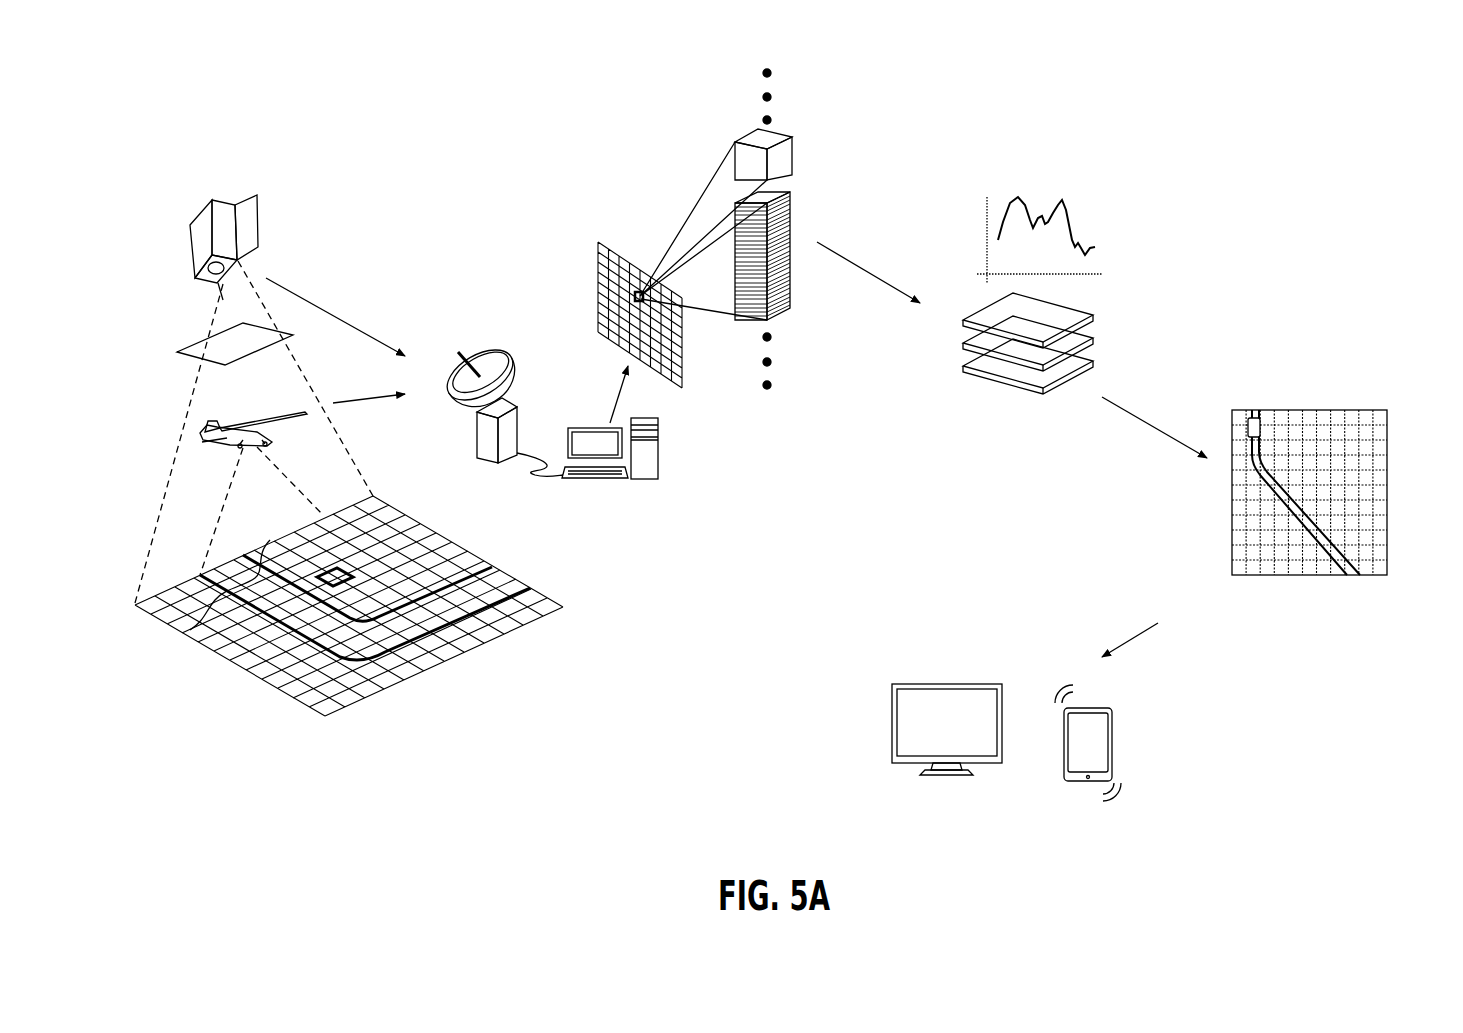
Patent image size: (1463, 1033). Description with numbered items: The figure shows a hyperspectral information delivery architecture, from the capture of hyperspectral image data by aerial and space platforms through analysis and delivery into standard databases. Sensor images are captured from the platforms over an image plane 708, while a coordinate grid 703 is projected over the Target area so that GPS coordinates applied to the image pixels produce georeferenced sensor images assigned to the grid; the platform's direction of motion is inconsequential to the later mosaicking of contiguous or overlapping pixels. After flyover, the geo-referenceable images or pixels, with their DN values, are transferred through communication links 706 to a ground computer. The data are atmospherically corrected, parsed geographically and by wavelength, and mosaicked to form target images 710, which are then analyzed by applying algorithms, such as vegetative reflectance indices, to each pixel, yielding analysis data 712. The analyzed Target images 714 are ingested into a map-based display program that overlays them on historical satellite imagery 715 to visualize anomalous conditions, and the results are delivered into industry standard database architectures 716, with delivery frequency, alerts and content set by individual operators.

The coordinate grid 703 is at (463, 626).
The communication links 706 is at (658, 447).
The image plane 708 is at (177, 352).
The target images 710 is at (813, 167).
The data layers / spectral analysis 712 is at (1099, 210).
The Target images overlay 714 is at (1263, 420).
The historical satellite imagery 715 is at (1380, 477).
The industry standard database architectures 716 is at (848, 738).